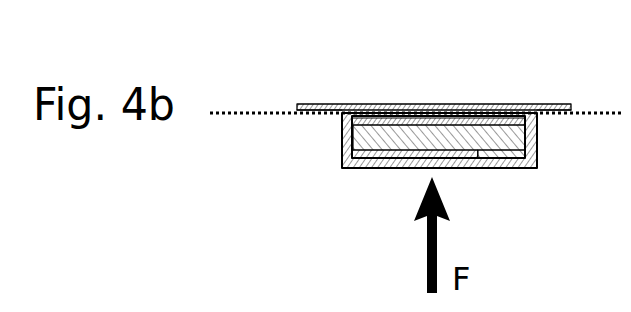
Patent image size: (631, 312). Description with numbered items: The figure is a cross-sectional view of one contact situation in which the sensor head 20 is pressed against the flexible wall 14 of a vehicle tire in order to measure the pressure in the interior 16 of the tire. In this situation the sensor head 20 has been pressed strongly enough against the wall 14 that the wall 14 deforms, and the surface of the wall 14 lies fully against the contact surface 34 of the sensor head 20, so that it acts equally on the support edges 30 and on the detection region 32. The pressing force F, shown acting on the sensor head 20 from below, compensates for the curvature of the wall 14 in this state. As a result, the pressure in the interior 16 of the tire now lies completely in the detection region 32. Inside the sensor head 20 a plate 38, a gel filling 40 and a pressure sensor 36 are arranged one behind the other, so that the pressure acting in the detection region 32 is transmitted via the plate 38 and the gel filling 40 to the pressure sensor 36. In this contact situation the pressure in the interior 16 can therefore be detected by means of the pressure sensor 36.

The flexible wall 14 is at (311, 103).
The interior 16 is at (485, 42).
The sensor head 20 is at (308, 176).
The support edges 30 is at (334, 115).
The detection region 32 is at (392, 92).
The contact surface 34 is at (598, 110).
The pressure sensor 36 is at (415, 150).
The plate 38 is at (375, 121).
The gel filling 40 is at (504, 142).